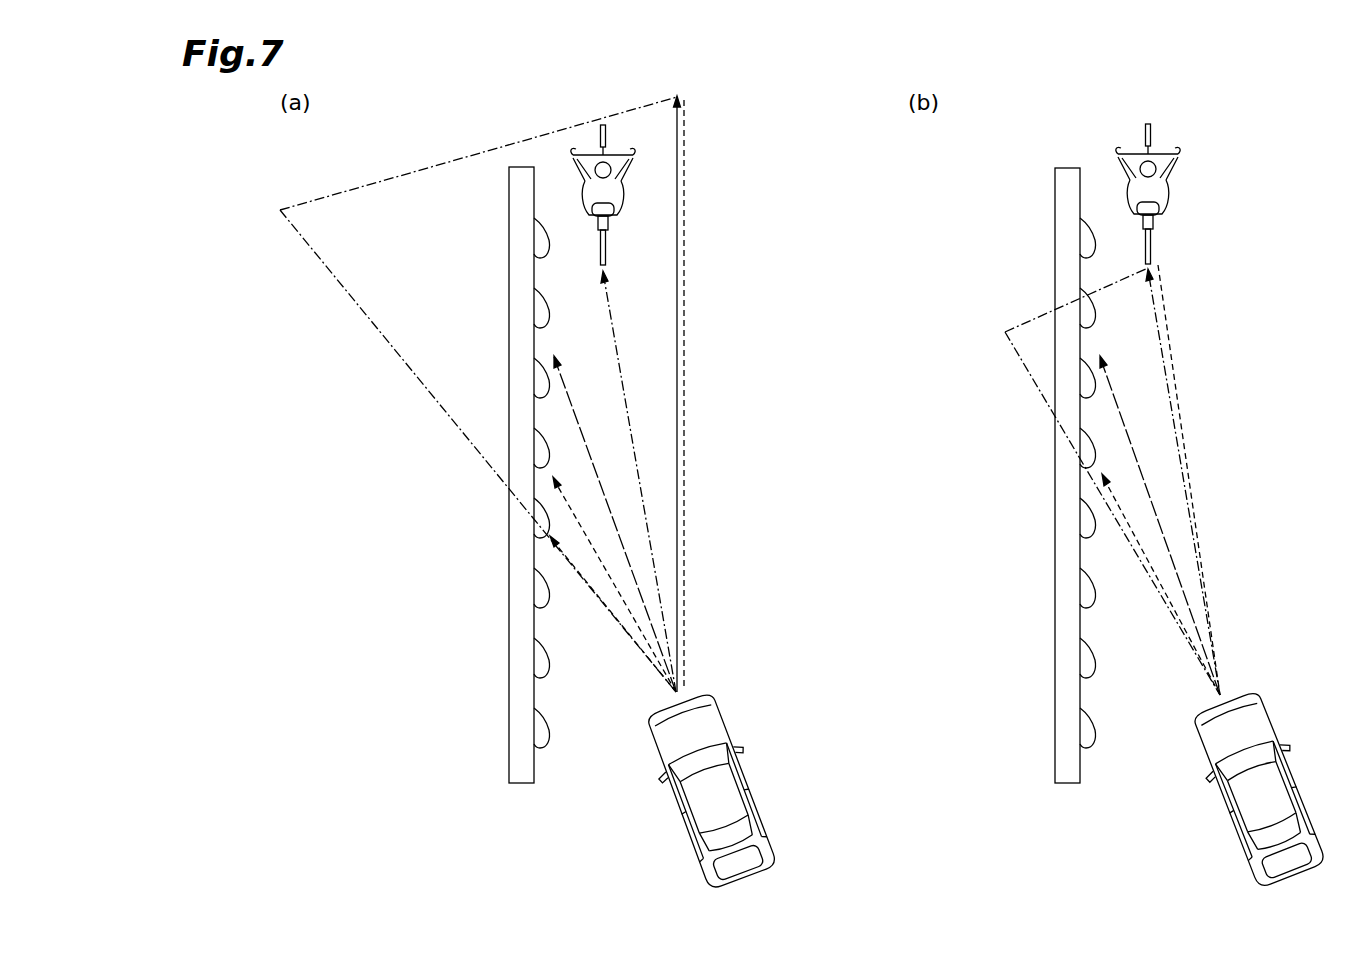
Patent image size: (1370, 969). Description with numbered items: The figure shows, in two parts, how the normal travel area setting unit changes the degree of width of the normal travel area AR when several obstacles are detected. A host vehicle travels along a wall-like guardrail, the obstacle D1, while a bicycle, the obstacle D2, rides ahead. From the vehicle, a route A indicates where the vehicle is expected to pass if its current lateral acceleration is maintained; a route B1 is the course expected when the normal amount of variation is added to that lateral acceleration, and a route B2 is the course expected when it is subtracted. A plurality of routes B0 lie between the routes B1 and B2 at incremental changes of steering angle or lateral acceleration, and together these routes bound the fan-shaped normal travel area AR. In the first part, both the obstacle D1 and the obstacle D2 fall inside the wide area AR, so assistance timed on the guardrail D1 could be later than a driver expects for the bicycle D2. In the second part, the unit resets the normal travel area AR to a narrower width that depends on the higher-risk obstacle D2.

The obstacle (guardrail) D1 is at (508, 668).
The obstacle (bicycle) D2 is at (618, 182).
The normal travel area AR is at (684, 382).
The route A is at (622, 550).
The routes B0 is at (640, 492).
The route B1 is at (678, 441).
The route B2 is at (582, 578).